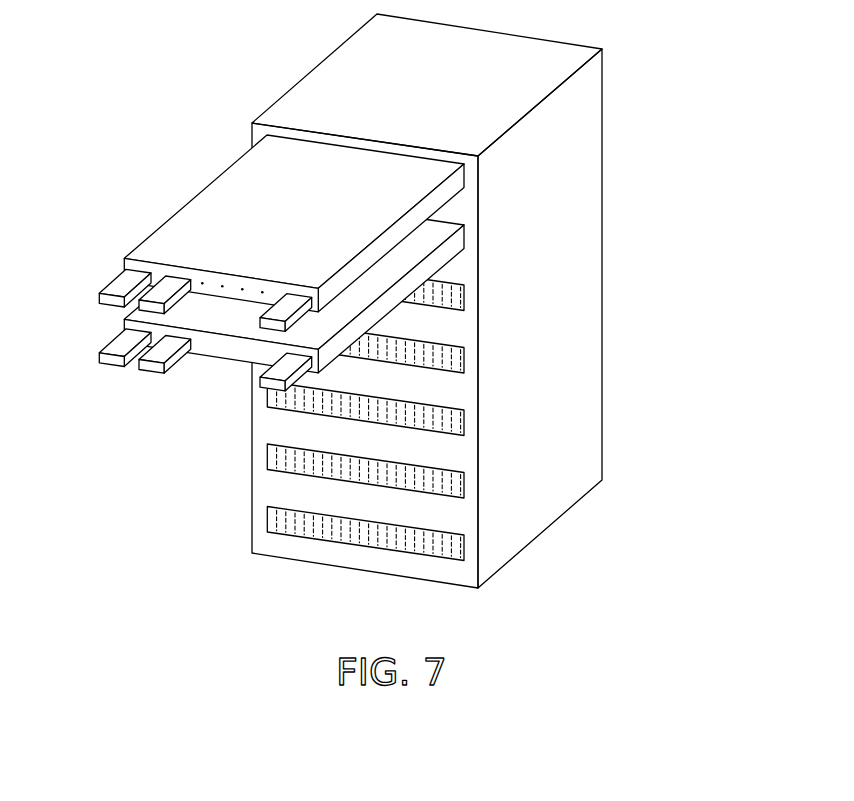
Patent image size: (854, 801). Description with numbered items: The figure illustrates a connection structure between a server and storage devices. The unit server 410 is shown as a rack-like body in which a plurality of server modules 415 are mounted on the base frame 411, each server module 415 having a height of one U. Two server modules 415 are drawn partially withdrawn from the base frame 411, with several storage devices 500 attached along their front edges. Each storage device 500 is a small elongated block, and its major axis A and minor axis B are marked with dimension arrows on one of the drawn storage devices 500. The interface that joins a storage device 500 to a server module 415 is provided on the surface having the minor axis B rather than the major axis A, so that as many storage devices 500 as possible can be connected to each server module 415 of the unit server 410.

The unit server 410 is at (476, 295).
The base frame 411 is at (603, 256).
The server module 415 is at (195, 194).
The storage device 500 is at (115, 277).
The major axis A is at (126, 327).
The minor axis B is at (99, 364).